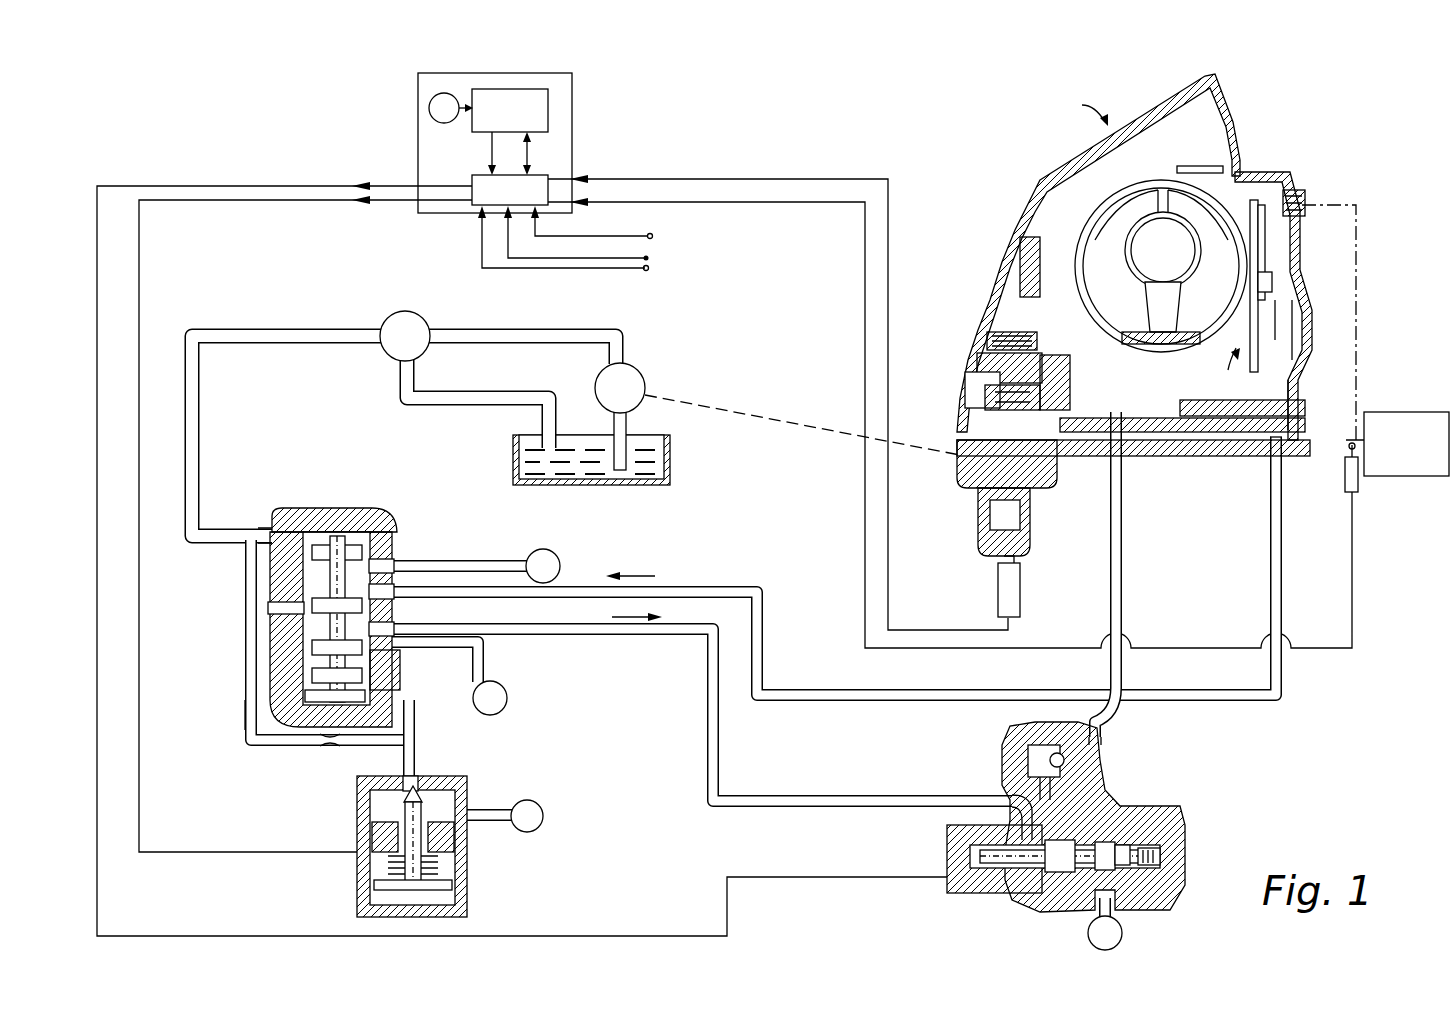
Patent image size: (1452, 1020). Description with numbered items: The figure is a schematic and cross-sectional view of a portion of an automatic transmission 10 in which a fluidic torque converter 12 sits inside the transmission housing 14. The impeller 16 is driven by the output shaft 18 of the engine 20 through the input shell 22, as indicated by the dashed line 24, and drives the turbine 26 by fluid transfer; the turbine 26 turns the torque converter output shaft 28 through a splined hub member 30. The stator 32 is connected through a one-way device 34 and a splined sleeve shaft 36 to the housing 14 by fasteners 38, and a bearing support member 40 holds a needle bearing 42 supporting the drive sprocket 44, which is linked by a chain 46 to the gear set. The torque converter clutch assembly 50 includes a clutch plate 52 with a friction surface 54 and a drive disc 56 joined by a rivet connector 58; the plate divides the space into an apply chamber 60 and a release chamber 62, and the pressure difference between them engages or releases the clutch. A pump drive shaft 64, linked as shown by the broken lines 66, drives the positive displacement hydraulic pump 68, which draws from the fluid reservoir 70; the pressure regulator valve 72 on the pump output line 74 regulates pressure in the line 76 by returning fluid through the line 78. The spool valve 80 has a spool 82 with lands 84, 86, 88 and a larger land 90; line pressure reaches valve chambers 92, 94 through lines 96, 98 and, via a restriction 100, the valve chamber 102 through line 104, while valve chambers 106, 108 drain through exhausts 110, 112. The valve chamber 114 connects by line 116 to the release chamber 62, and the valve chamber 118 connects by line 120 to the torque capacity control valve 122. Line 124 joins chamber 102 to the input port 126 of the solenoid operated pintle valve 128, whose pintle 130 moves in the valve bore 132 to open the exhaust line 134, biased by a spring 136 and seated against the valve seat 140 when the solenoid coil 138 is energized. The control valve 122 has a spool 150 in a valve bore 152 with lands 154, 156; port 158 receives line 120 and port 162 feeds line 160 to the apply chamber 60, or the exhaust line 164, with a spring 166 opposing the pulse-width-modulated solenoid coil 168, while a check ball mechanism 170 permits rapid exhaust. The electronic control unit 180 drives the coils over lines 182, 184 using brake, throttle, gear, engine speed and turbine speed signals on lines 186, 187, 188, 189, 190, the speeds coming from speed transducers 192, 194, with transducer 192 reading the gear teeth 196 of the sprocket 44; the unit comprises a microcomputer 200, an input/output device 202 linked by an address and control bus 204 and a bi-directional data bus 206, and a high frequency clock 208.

The portion of an automatic transmission 10 is at (1077, 109).
The fluidic torque converter 12 is at (1215, 152).
The transmission housing 14 is at (1208, 104).
The impeller 16 is at (1132, 210).
The output shaft 18 is at (1345, 445).
The engine 20 is at (1380, 412).
The input shell 22 is at (1262, 180).
The dashed line 24 is at (1362, 262).
The turbine 26 is at (1188, 190).
The torque converter output shaft 28 is at (1165, 440).
The splined hub member 30 is at (1232, 432).
The stator 32 is at (1160, 283).
The one-way device 34 is at (1148, 322).
The splined sleeve shaft 36 is at (1158, 452).
The fasteners 38 is at (1052, 355).
The bearing support member 40 is at (965, 378).
The needle bearing 42 is at (990, 390).
The drive sprocket 44 is at (980, 362).
The chain 46 is at (1005, 332).
The torque converter clutch assembly 50 is at (1230, 299).
The clutch plate 52 is at (1265, 258).
The friction surface 54 is at (1300, 222).
The drive disc 56 is at (1278, 312).
The rivet connector 58 is at (1272, 282).
The apply chamber 60 is at (1296, 330).
The release chamber 62 is at (1296, 366).
The pump drive shaft 64 is at (1050, 458).
The broken lines 66 is at (790, 425).
The positive displacement hydraulic pump 68 is at (644, 378).
The fluid reservoir 70 is at (670, 470).
The pressure regulator valve 72 is at (420, 314).
The pump output line 74 is at (577, 344).
The line 76 is at (330, 344).
The line 78 is at (490, 405).
The spool valve 80 is at (342, 465).
The spool 82 is at (330, 575).
The land 84 is at (375, 528).
The land 86 is at (400, 594).
The land 88 is at (400, 655).
The land 90 is at (402, 680).
The valve chamber 92 is at (330, 545).
The valve chamber 94 is at (312, 647).
The line 96 is at (262, 528).
The line 98 is at (312, 605).
The restriction 100 is at (335, 748).
The valve chamber 102 is at (250, 740).
The line 104 is at (245, 708).
The valve chamber 106 is at (396, 566).
The valve chamber 108 is at (310, 695).
The exhaust 110 is at (480, 558).
The exhaust 112 is at (495, 672).
The valve chamber 114 is at (268, 600).
The line 116 is at (732, 592).
The valve chamber 118 is at (312, 660).
The line 120 is at (615, 636).
The torque capacity control valve 122 is at (1138, 766).
The line 124 is at (418, 758).
The input port 126 is at (420, 785).
The solenoid operated pintle valve 128 is at (492, 898).
The pintle 130 is at (405, 820).
The valve bore 132 is at (445, 830).
The exhaust line 134 is at (488, 806).
The spring 136 is at (385, 872).
The solenoid coil 138 is at (450, 855).
The valve seat 140 is at (404, 800).
The spool 150 is at (1075, 880).
The valve bore 152 is at (1108, 842).
The land 154 is at (1128, 845).
The land 156 is at (1055, 872).
The port 158 is at (1002, 795).
The line 160 is at (1124, 590).
The port 162 is at (1105, 712).
The exhaust line 164 is at (1115, 912).
The spring 166 is at (1162, 855).
The solenoid coil 168 is at (995, 890).
The check ball mechanism 170 is at (1052, 755).
The electronic control unit 180 is at (500, 66).
The line 182 is at (140, 248).
The line 184 is at (242, 186).
The line 186 is at (590, 270).
The line 187 is at (652, 252).
The line 188 is at (652, 233).
The line 189 is at (758, 202).
The line 190 is at (738, 179).
The speed transducer 192 is at (1020, 592).
The speed transducer 194 is at (1358, 488).
The gear teeth 196 is at (985, 556).
The microcomputer 200 is at (530, 88).
The input/output device 202 is at (540, 176).
The address and control bus 204 is at (488, 148).
The bi-directional data bus 206 is at (532, 160).
The high frequency clock 208 is at (428, 100).